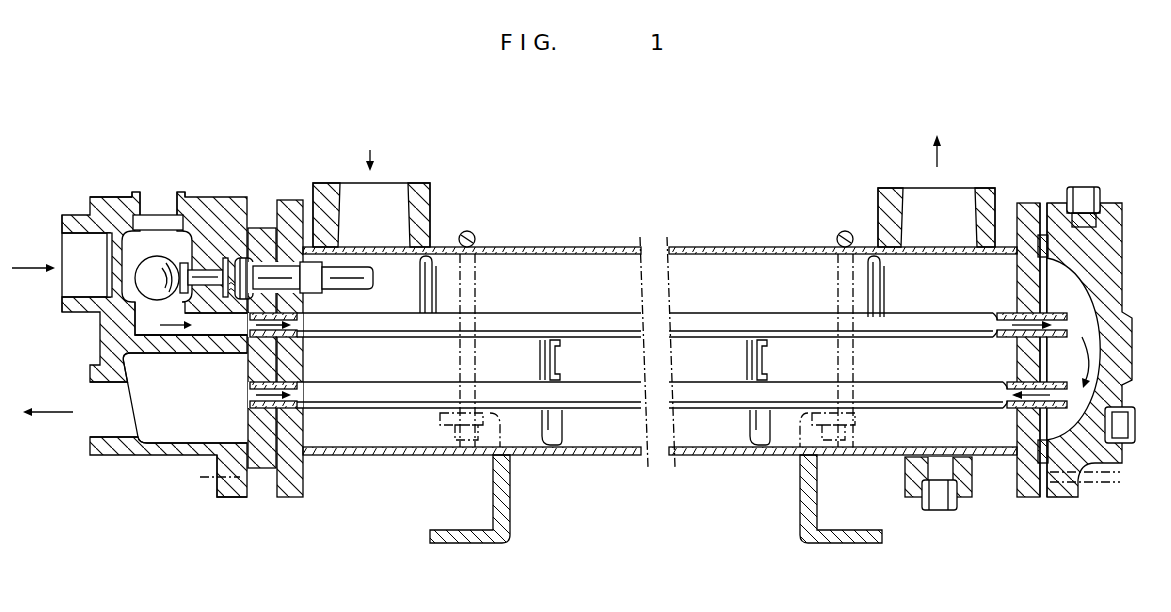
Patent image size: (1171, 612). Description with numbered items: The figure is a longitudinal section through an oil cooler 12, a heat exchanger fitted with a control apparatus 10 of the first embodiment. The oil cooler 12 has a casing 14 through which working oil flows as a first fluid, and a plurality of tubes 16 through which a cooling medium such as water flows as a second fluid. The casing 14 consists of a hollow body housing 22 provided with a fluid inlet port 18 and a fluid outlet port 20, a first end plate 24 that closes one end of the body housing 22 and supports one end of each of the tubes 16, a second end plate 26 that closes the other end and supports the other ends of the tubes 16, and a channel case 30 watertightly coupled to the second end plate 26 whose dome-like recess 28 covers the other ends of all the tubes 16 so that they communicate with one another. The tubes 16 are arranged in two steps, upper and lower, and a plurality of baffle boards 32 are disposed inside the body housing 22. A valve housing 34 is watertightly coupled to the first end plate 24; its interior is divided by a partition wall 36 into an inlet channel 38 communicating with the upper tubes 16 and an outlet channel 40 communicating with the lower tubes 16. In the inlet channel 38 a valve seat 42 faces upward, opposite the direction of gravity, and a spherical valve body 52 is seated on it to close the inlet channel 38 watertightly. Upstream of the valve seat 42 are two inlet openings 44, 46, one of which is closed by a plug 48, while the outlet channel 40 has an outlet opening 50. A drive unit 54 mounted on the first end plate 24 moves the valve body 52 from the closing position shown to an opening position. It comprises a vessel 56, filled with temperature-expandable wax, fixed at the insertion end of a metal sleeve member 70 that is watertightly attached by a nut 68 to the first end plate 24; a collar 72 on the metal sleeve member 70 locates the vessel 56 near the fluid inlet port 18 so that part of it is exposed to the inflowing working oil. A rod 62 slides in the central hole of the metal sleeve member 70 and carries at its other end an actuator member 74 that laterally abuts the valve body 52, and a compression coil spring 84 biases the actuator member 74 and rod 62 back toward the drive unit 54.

The control apparatus 10 is at (95, 188).
The oil cooler 12 is at (535, 224).
The casing 14 is at (600, 247).
The tubes 16 is at (600, 317).
The fluid inlet port 18 is at (412, 198).
The fluid outlet port 20 is at (905, 210).
The body housing 22 is at (735, 247).
The first end plate 24 is at (263, 229).
The second end plate 26 is at (1030, 207).
The dome-like recess 28 is at (1098, 348).
The channel case 30 is at (1118, 273).
The baffle boards 32 is at (432, 280).
The valve housing 34 is at (200, 457).
The partition wall 36 is at (185, 398).
The inlet channel 38 is at (148, 328).
The outlet channel 40 is at (172, 438).
The valve seat 42 is at (100, 313).
The inlet opening 44 is at (66, 250).
The inlet opening 46 is at (168, 220).
The plug 48 is at (148, 200).
The outlet opening 50 is at (113, 433).
The spherical valve body 52 is at (133, 280).
The drive unit 54 is at (324, 292).
The vessel 56 is at (358, 297).
The rod 62 is at (235, 287).
The nut 68 is at (240, 257).
The metal sleeve member 70 is at (298, 297).
The collar 72 is at (290, 223).
The actuator member 74 is at (207, 262).
The compression coil spring 84 is at (177, 347).